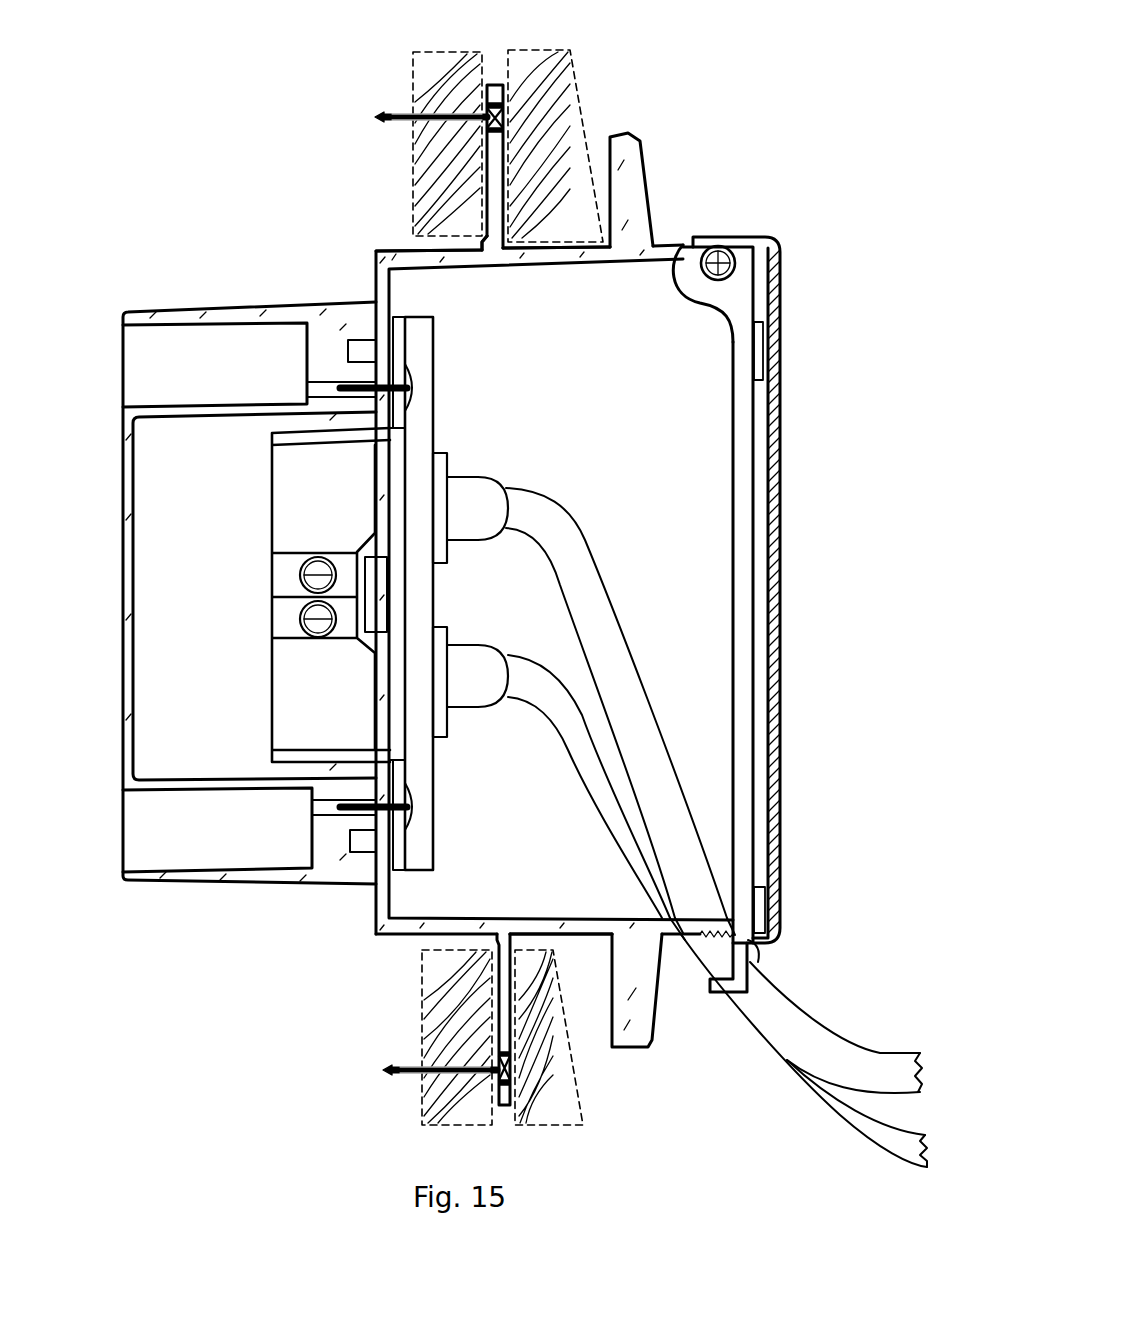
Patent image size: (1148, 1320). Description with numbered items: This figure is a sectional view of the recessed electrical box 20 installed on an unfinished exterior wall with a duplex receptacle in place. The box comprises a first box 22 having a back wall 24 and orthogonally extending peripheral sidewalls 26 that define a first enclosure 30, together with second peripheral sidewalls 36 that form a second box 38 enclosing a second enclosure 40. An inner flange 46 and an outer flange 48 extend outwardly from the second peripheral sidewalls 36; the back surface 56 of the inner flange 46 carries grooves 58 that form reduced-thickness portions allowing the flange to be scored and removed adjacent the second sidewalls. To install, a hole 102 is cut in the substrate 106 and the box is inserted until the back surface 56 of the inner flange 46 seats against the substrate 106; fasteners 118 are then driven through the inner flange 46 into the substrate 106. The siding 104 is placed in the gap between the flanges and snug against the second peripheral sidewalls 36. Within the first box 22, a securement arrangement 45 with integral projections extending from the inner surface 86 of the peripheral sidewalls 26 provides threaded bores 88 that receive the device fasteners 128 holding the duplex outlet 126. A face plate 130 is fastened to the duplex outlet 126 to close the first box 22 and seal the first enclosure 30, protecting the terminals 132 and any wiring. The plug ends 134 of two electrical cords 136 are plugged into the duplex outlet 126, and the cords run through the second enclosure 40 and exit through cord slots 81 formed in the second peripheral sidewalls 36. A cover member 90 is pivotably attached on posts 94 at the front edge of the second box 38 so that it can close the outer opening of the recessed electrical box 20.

The recessed electrical box 20 is at (248, 259).
The first box 22 is at (225, 652).
The back wall 24 is at (128, 590).
The peripheral sidewalls 26 is at (245, 880).
The first enclosure 30 is at (179, 580).
The second peripheral sidewalls 36 is at (572, 247).
The second box 38 is at (689, 248).
The second enclosure 40 is at (588, 558).
The securement arrangement 45 is at (333, 826).
The inner flange 46 is at (491, 86).
The outer flange 48 is at (636, 180).
The back surface 56 is at (487, 188).
The grooves 58 is at (482, 254).
The cord slots 81 is at (683, 940).
The inner surface 86 is at (203, 417).
The threaded bores 88 is at (322, 392).
The cover member 90 is at (781, 592).
The posts 94 is at (732, 246).
The hole 102 is at (488, 240).
The siding 104 is at (555, 80).
The substrate 106 is at (433, 73).
The fasteners 118 is at (440, 160).
The duplex outlet 126 is at (355, 460).
The device fasteners 128 is at (414, 387).
The face plate 130 is at (428, 591).
The terminals 132 is at (313, 637).
The plug ends 134 is at (470, 595).
The electrical cords 136 is at (592, 589).